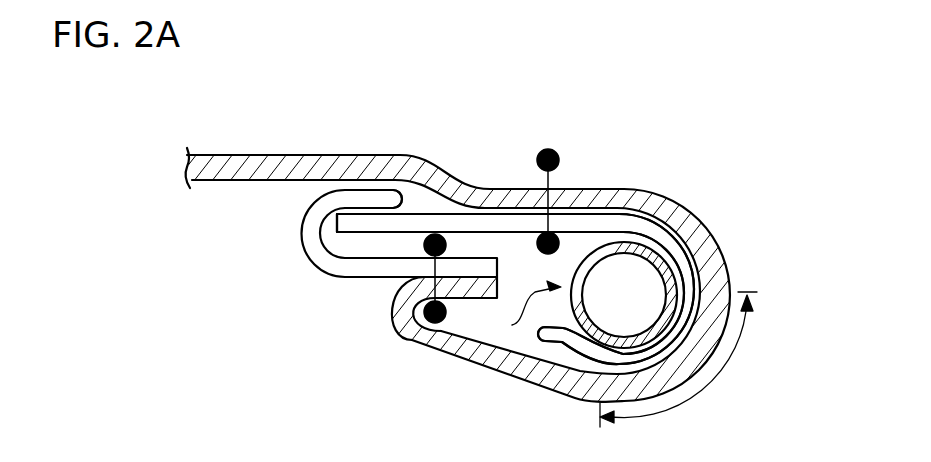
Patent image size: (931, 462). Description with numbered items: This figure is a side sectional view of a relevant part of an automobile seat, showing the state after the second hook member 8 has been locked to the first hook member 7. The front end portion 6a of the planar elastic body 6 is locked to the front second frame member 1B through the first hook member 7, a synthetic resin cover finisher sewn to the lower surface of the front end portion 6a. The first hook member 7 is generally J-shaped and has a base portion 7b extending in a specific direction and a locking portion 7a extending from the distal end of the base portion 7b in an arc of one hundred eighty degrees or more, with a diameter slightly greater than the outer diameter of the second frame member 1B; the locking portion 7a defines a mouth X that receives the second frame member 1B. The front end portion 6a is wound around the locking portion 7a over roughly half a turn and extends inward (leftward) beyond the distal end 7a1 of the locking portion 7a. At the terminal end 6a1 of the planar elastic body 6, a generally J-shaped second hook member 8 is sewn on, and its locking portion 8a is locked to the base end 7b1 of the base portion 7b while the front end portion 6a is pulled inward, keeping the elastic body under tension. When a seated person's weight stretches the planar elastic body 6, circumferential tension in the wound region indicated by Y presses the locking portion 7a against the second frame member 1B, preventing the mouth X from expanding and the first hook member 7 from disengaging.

The planar elastic body 6 is at (256, 155).
The front end portion 6a is at (701, 351).
The terminal end 6a1 is at (400, 306).
The first hook member 7 is at (575, 222).
The locking portion 7a is at (695, 278).
The distal end 7a1 is at (567, 348).
The base portion 7b is at (463, 231).
The base end 7b1 is at (349, 213).
The second hook member 8 is at (320, 259).
The locking portion 8a is at (372, 196).
The second frame member 1B is at (628, 270).
The mouth X is at (524, 312).
The region of the planar elastic body Y is at (683, 398).